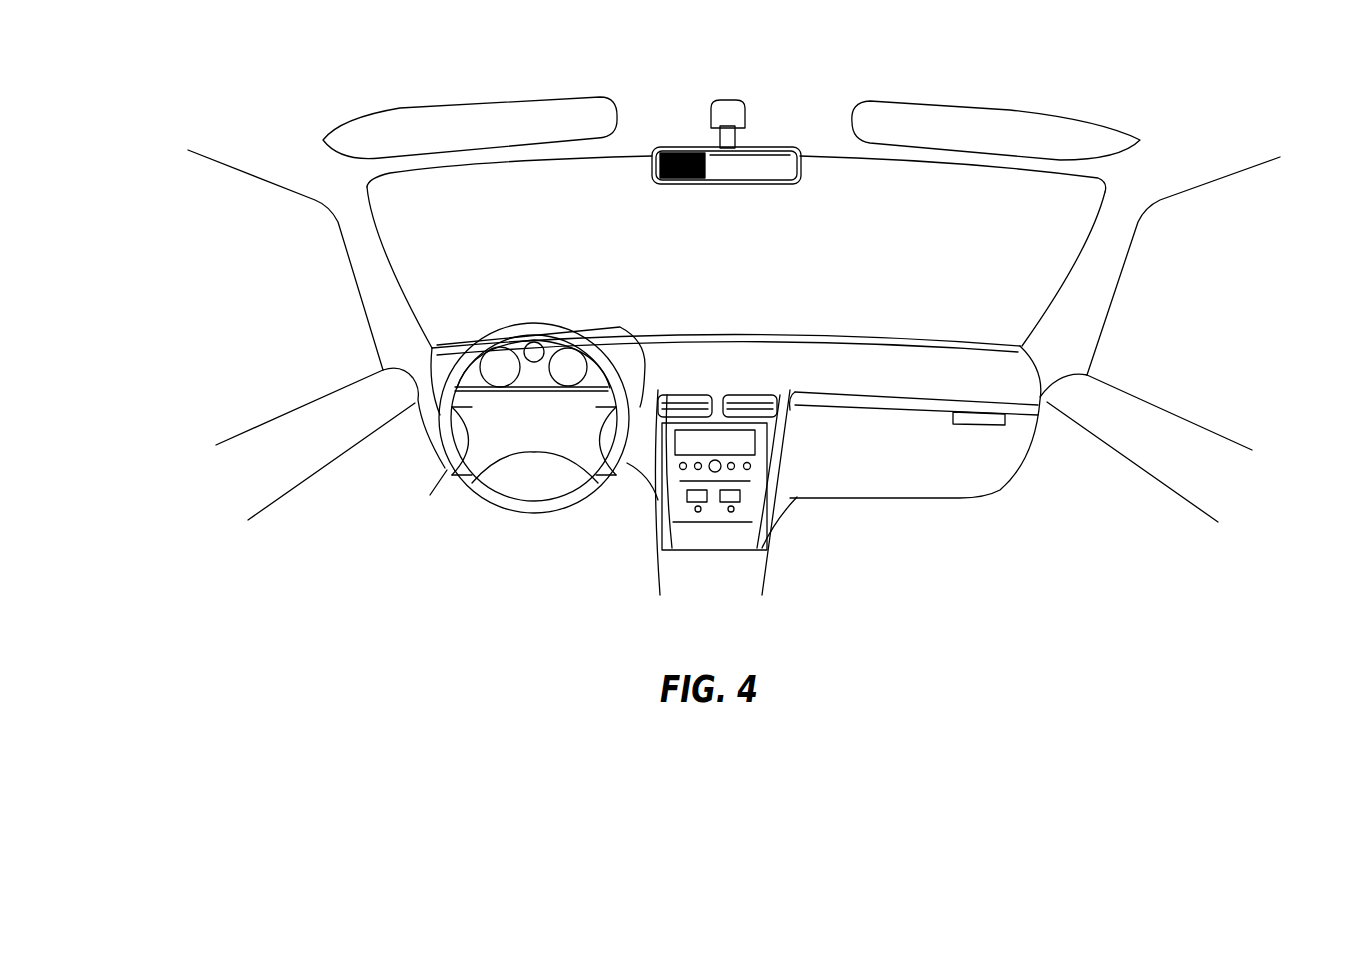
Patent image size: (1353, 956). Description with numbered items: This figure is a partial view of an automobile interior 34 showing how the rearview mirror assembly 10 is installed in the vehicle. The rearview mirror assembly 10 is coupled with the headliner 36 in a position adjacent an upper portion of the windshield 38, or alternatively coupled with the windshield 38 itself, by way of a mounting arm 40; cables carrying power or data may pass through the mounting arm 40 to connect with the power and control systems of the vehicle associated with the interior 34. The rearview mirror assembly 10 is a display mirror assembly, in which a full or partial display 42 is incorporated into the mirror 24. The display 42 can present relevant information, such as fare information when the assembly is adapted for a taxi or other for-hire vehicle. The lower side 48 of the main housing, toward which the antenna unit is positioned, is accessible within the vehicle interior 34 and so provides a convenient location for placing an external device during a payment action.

The rearview mirror assembly 10 is at (751, 142).
The mirror 24 is at (765, 170).
The automobile interior 34 is at (1128, 182).
The headliner 36 is at (800, 96).
The windshield 38 is at (938, 251).
The mounting arm 40 is at (733, 142).
The display 42 is at (683, 183).
The lower side 48 is at (727, 188).